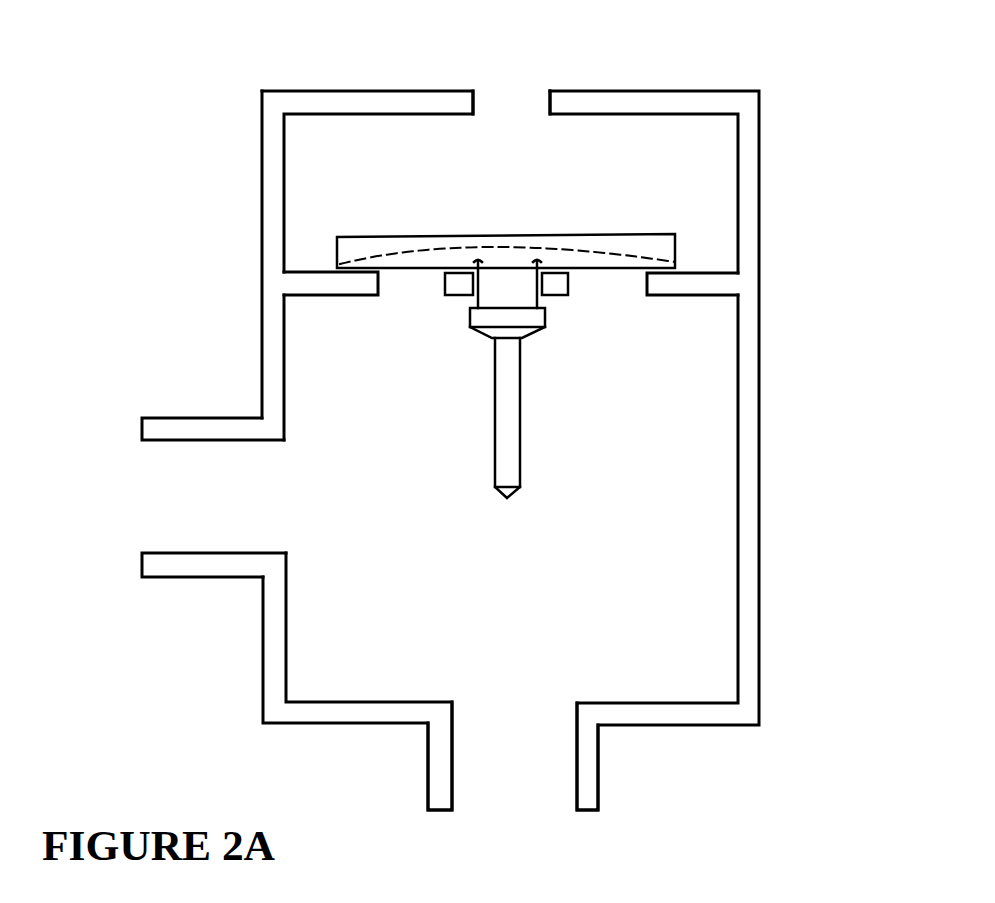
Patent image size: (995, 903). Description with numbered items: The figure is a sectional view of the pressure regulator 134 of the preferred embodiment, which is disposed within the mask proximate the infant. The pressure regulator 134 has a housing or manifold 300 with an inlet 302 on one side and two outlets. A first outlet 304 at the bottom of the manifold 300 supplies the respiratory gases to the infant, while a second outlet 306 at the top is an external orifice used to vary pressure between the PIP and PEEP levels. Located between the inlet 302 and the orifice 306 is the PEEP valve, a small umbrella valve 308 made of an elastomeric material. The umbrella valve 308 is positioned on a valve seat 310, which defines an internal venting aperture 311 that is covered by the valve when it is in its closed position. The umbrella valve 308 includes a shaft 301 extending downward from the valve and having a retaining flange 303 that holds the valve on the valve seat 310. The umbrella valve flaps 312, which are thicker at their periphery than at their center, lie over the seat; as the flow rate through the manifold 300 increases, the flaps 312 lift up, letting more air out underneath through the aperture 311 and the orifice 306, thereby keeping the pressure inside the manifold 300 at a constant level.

The pressure regulator 134 is at (822, 445).
The housing or manifold 300 is at (458, 450).
The shaft 301 is at (523, 447).
The inlet 302 is at (153, 498).
The retaining flange 303 is at (465, 318).
The first outlet 304 is at (555, 802).
The second outlet 306 is at (550, 88).
The umbrella valve 308 is at (680, 252).
The valve seat 310 is at (668, 297).
The internal venting aperture 311 is at (418, 290).
The umbrella valve flap 312 is at (653, 233).